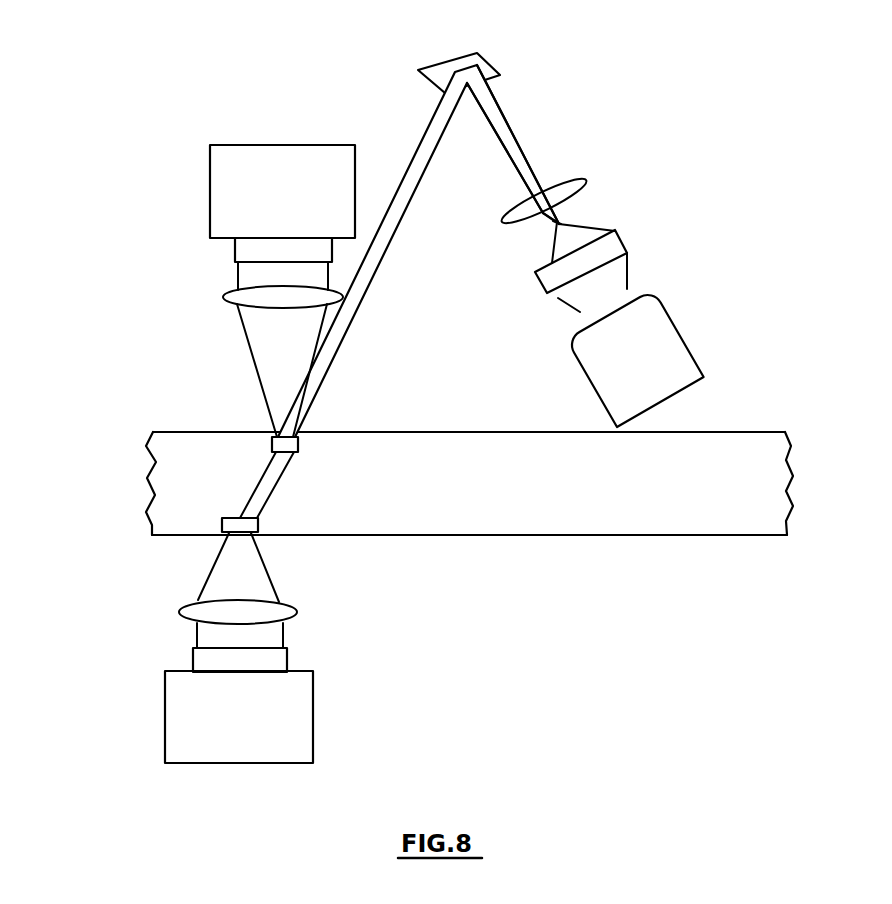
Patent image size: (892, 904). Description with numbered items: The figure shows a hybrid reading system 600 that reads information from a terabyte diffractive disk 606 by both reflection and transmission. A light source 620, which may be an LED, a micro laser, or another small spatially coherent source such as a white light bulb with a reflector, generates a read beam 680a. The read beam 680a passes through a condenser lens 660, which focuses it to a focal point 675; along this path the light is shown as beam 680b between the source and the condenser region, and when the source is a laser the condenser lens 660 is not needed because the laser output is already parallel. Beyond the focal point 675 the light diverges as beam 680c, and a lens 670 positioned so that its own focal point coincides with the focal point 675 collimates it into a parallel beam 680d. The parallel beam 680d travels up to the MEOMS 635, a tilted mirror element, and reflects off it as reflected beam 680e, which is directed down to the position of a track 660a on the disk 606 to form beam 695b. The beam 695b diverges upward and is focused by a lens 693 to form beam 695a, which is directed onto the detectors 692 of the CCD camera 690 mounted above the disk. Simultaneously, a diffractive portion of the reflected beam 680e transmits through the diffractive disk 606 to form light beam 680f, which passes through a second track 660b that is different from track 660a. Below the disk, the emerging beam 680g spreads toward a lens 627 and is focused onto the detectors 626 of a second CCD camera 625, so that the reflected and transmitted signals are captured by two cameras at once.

The reading system 600 is at (118, 72).
The diffractive disk 606 is at (740, 437).
The light source 620 is at (662, 312).
The CCD camera 625 is at (178, 705).
The detectors 626 is at (193, 655).
The lens 627 is at (296, 612).
The MEOMS 635 is at (485, 53).
The condenser lens 660 is at (626, 252).
The track 660a is at (270, 441).
The track 660b is at (258, 525).
The lens 670 is at (576, 186).
The focal point 675 is at (575, 219).
The read beam 680a is at (562, 304).
The light beam segment 680b is at (551, 247).
The beam 680c is at (563, 222).
The parallel beam 680d is at (516, 140).
The reflected beam 680e is at (421, 143).
The light beam 680f is at (277, 482).
The beam 680g is at (274, 582).
The CCD camera 690 is at (212, 172).
The detectors 692 is at (236, 245).
The lens 693 is at (230, 298).
The beam 695a is at (238, 272).
The beam 695b is at (253, 357).